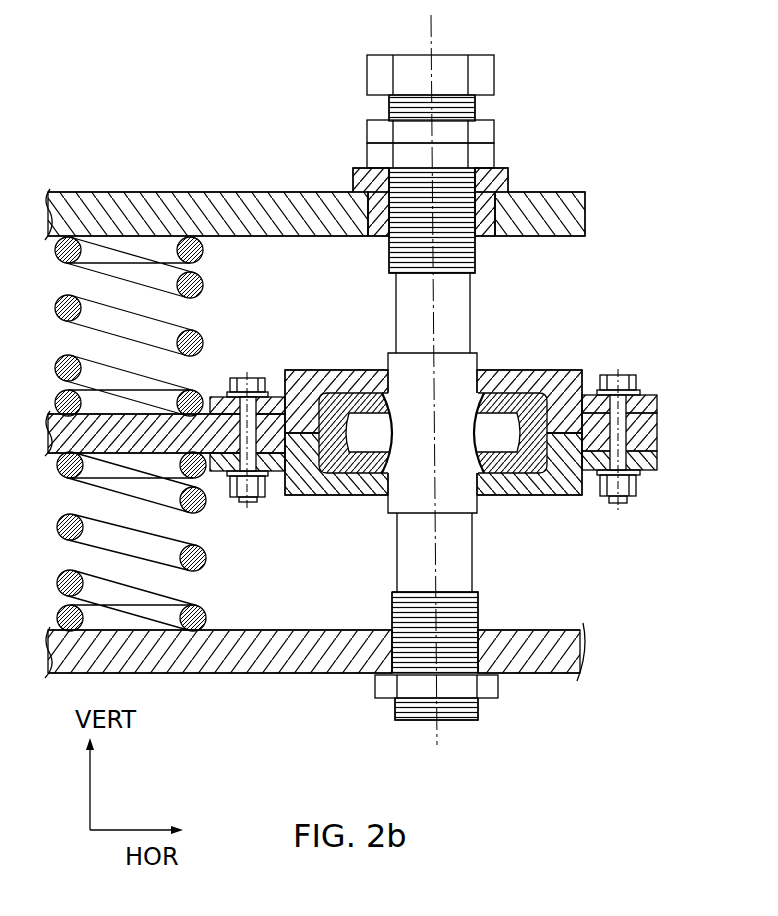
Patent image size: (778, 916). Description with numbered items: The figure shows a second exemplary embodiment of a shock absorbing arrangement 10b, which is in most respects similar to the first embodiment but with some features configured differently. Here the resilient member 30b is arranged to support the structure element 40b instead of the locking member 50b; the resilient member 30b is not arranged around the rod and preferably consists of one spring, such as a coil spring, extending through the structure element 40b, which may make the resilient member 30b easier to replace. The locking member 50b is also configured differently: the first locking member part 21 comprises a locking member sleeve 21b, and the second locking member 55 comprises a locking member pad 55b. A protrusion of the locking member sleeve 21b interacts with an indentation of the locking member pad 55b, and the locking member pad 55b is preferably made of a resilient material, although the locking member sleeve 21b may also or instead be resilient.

The shock absorbing arrangement 10b is at (570, 95).
The structure element 40b is at (130, 430).
The locking member 50b is at (433, 326).
The first locking member part 21 is at (491, 380).
The locking member sleeve 21b is at (452, 374).
The second locking member 55 is at (467, 399).
The locking member pad 55b is at (537, 380).
The resilient member 30b is at (228, 573).